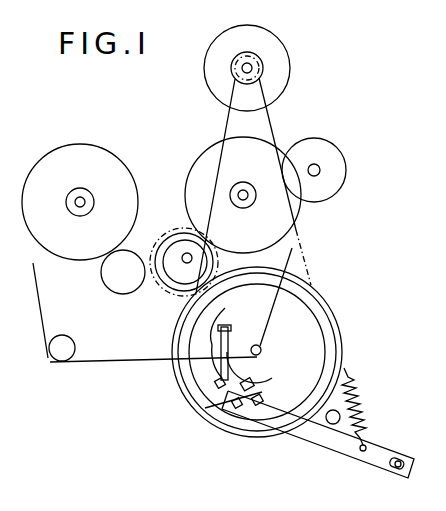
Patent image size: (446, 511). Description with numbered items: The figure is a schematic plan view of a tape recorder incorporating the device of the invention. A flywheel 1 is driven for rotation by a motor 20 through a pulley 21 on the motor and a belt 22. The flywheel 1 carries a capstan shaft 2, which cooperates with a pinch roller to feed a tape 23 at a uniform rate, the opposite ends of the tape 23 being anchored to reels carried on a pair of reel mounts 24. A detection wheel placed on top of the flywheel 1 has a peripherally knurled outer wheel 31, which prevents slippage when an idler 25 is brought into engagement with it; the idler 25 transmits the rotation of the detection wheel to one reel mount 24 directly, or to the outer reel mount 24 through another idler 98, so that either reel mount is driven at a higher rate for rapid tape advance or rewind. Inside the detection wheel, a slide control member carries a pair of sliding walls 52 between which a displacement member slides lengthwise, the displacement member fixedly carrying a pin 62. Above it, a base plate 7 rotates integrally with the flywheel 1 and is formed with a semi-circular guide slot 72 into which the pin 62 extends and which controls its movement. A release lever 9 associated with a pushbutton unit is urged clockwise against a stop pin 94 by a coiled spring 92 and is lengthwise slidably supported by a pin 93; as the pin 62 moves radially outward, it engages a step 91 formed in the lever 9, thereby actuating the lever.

The flywheel 1 is at (342, 316).
The capstan shaft 2 is at (253, 346).
The base plate 7 is at (263, 430).
The release lever 9 is at (308, 438).
The motor 20 is at (283, 60).
The pulley 21 is at (250, 56).
The belt 22 is at (273, 115).
The tape 23 is at (103, 363).
The reel mounts 24 is at (70, 152).
The idler 25 is at (186, 229).
The outer wheel 31 is at (340, 334).
The sliding walls 52 is at (213, 328).
The pin 62 is at (254, 382).
The guide slot 72 is at (217, 403).
The step 91 is at (236, 410).
The coiled spring 92 is at (362, 410).
The pin 93 is at (397, 472).
The stop pin 94 is at (352, 392).
The idler 98 is at (107, 284).